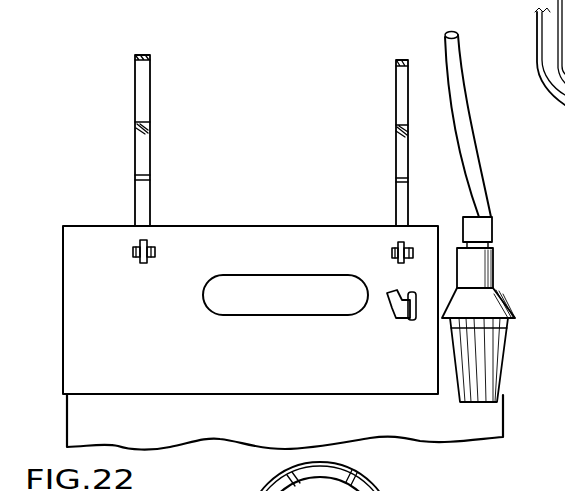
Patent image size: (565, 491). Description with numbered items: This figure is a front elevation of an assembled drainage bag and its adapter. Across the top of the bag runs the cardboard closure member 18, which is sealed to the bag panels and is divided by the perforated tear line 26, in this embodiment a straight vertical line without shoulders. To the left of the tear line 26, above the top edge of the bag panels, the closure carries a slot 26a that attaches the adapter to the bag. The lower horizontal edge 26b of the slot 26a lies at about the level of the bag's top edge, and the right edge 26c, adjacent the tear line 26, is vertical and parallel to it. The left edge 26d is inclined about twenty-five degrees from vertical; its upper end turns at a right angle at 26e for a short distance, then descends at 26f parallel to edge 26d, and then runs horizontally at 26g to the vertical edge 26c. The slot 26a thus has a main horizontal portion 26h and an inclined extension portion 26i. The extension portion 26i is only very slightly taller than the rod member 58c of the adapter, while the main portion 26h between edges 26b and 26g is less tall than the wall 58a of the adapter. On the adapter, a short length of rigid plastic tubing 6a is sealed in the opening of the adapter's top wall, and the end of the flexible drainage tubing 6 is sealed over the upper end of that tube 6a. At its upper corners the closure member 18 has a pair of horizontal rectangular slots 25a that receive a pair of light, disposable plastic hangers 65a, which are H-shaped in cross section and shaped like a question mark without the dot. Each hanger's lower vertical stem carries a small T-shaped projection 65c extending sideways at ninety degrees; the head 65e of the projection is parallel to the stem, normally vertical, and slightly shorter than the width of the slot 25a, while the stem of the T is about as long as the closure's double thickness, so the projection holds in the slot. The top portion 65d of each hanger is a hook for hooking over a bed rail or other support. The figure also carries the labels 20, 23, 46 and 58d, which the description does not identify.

The flexible drainage tubing 6 is at (469, 98).
The rigid plastic tubing 6a is at (489, 245).
The closure member 18 is at (86, 216).
The slotted plate 20 is at (207, 237).
The direction arrow 23 is at (431, 197).
The horizontal rectangular slots 25a is at (133, 251).
The perforated tear line 26 is at (467, 390).
The slot 26a is at (391, 317).
The lower horizontal edge 26b is at (397, 322).
The right edge 26c is at (440, 307).
The left edge 26d is at (389, 303).
The right-angle edge portion 26e is at (388, 294).
The inclined edge portion 26f is at (390, 292).
The upper horizontal edge 26g is at (397, 290).
The main horizontal portion 26h is at (411, 322).
The inclined extension portion 26i is at (387, 313).
The cone flange 46 is at (508, 320).
The wall 58a is at (444, 302).
The rod member 58c is at (437, 343).
The pin head 58d is at (413, 291).
The hangers 65a is at (151, 88).
The T-shaped projection 65c is at (150, 227).
The top portion 65d is at (145, 77).
The head 65e is at (149, 264).